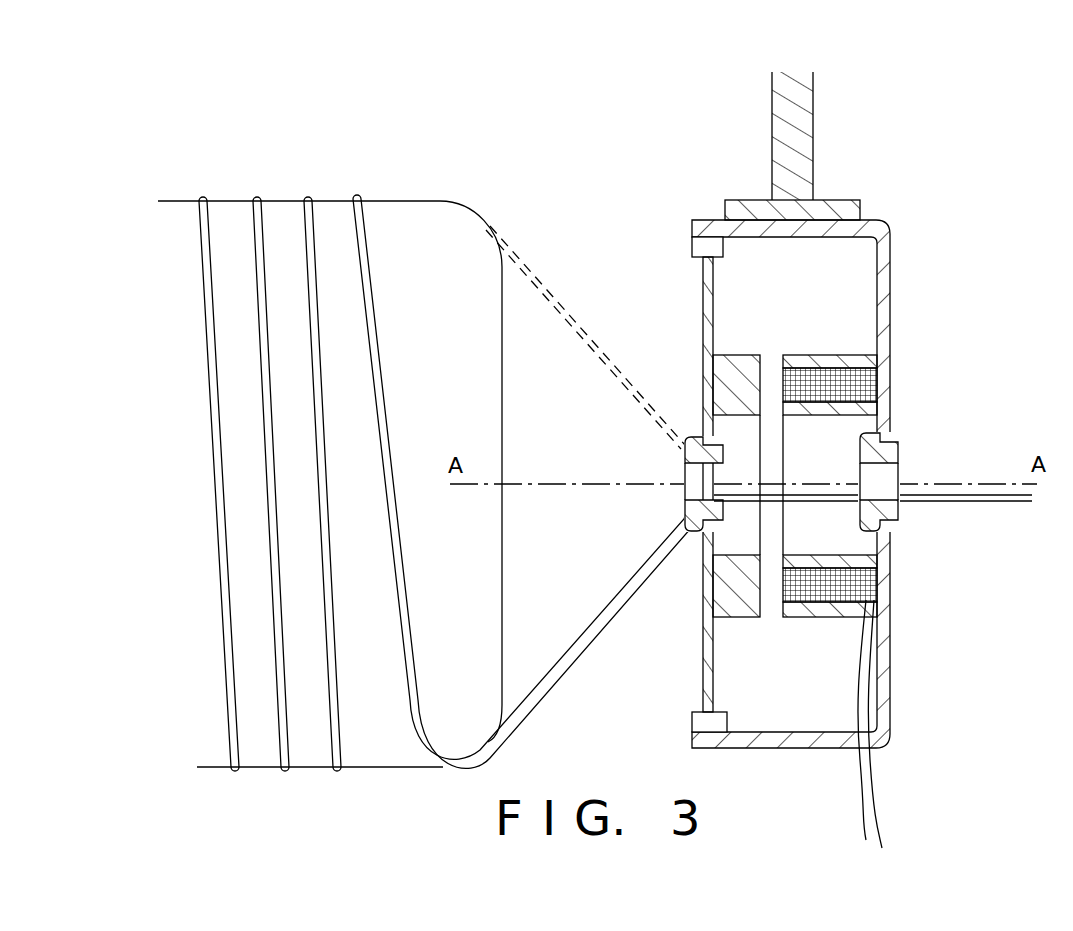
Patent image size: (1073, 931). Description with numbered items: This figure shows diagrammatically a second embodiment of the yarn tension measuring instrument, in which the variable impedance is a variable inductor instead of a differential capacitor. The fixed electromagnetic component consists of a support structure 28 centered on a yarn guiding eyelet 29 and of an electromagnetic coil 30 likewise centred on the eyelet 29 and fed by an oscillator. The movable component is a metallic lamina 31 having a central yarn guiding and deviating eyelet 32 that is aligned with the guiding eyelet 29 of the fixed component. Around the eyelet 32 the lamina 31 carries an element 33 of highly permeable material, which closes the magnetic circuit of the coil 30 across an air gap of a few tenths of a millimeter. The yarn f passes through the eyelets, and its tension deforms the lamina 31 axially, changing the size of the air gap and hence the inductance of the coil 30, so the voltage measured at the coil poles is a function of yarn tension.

The support structure 28 is at (890, 300).
The yarn guiding eyelet 29 is at (898, 455).
The electromagnetic coil 30 is at (830, 368).
The metallic lamina 31 is at (702, 317).
The yarn guiding and deviating eyelet 32 is at (693, 532).
The element of highly permeable material 33 is at (733, 380).
The filament wire f is at (568, 652).